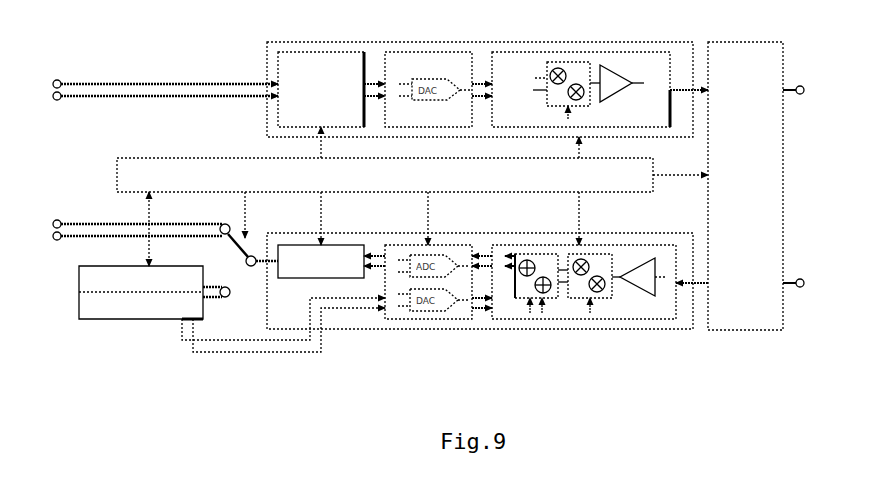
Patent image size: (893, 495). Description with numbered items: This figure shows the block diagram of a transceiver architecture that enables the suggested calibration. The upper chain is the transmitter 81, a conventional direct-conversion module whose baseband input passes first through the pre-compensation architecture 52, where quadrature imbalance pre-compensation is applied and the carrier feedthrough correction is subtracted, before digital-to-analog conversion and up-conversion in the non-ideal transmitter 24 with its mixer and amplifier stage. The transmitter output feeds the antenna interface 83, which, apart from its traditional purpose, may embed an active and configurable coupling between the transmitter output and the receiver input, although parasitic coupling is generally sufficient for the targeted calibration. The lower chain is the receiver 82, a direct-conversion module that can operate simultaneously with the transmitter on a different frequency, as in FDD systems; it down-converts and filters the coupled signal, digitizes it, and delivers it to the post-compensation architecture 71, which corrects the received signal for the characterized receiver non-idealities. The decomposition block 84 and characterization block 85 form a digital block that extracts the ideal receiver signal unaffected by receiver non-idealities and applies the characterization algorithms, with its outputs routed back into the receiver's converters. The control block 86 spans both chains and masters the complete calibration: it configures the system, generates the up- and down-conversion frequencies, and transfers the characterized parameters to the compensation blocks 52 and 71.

The non-ideal transmitter 24 is at (581, 89).
The pre-compensation architecture 52 is at (321, 89).
The post-compensation architecture 71 is at (321, 261).
The transmitter 81 is at (480, 75).
The receiver 82 is at (480, 301).
The antenna interface 83 is at (745, 186).
The decomposition block 84 is at (141, 279).
The characterization block 85 is at (141, 306).
The control block 86 is at (412, 196).